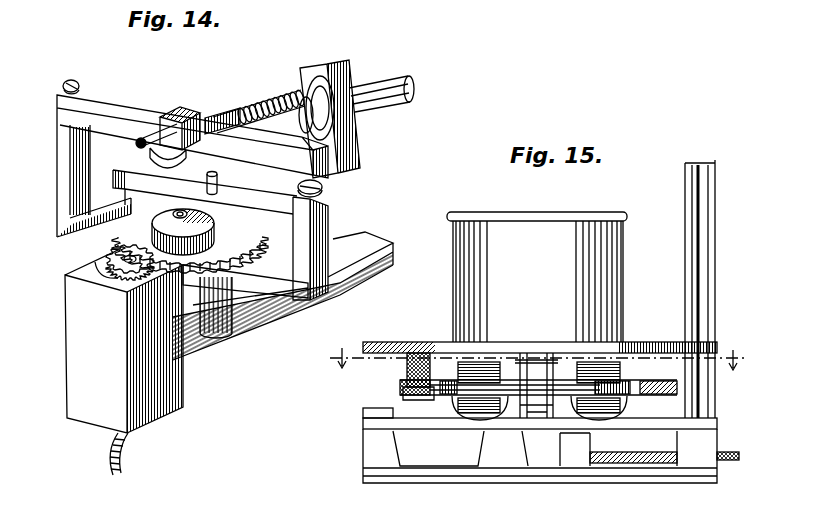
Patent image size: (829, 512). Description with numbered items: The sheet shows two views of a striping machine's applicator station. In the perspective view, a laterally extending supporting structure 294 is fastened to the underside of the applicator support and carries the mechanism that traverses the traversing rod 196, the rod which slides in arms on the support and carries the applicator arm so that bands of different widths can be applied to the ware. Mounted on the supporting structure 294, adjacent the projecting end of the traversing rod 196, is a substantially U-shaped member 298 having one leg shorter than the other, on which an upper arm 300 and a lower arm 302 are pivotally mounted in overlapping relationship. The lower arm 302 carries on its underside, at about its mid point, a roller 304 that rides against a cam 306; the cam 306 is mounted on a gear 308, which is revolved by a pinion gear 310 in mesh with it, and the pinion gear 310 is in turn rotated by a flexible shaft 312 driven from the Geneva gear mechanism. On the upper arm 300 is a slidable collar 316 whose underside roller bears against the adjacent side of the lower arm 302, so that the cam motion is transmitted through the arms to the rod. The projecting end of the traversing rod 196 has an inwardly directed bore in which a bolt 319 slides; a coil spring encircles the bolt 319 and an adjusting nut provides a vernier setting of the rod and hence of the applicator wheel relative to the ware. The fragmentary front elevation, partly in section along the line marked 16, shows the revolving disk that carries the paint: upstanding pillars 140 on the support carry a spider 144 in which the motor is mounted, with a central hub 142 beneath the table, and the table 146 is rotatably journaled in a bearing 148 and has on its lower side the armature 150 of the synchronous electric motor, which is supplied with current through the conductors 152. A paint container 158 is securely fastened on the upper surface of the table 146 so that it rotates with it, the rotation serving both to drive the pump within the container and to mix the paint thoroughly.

In FIG. 14, the upper arm 300 is at (107, 100).
In FIG. 14, the slidable collar 316 is at (182, 107).
In FIG. 14, the bolt 319 is at (270, 107).
In FIG. 14, the traversing rod 196 is at (386, 78).
In FIG. 14, the lower arm 302 is at (283, 188).
In FIG. 14, the roller 304 is at (180, 198).
In FIG. 14, the cam 306 is at (130, 222).
In FIG. 14, the pinion gear 310 is at (93, 290).
In FIG. 14, the U-shaped member 298 is at (270, 310).
In FIG. 14, the supporting structure 294 is at (363, 280).
In FIG. 14, the gear 308 is at (280, 285).
In FIG. 14, the flexible shaft 312 is at (133, 453).
In FIG. 15, the paint container 158 is at (570, 267).
In FIG. 15, the table 146 is at (655, 342).
In FIG. 15, the section line 16 is at (537, 352).
In FIG. 15, the armature 150 is at (400, 388).
In FIG. 15, the bearing 148 is at (520, 420).
In FIG. 15, the hub 142 is at (543, 420).
In FIG. 15, the spider 144 is at (653, 420).
In FIG. 15, the conductors 152 is at (725, 452).
In FIG. 15, the pillars 140 is at (380, 447).